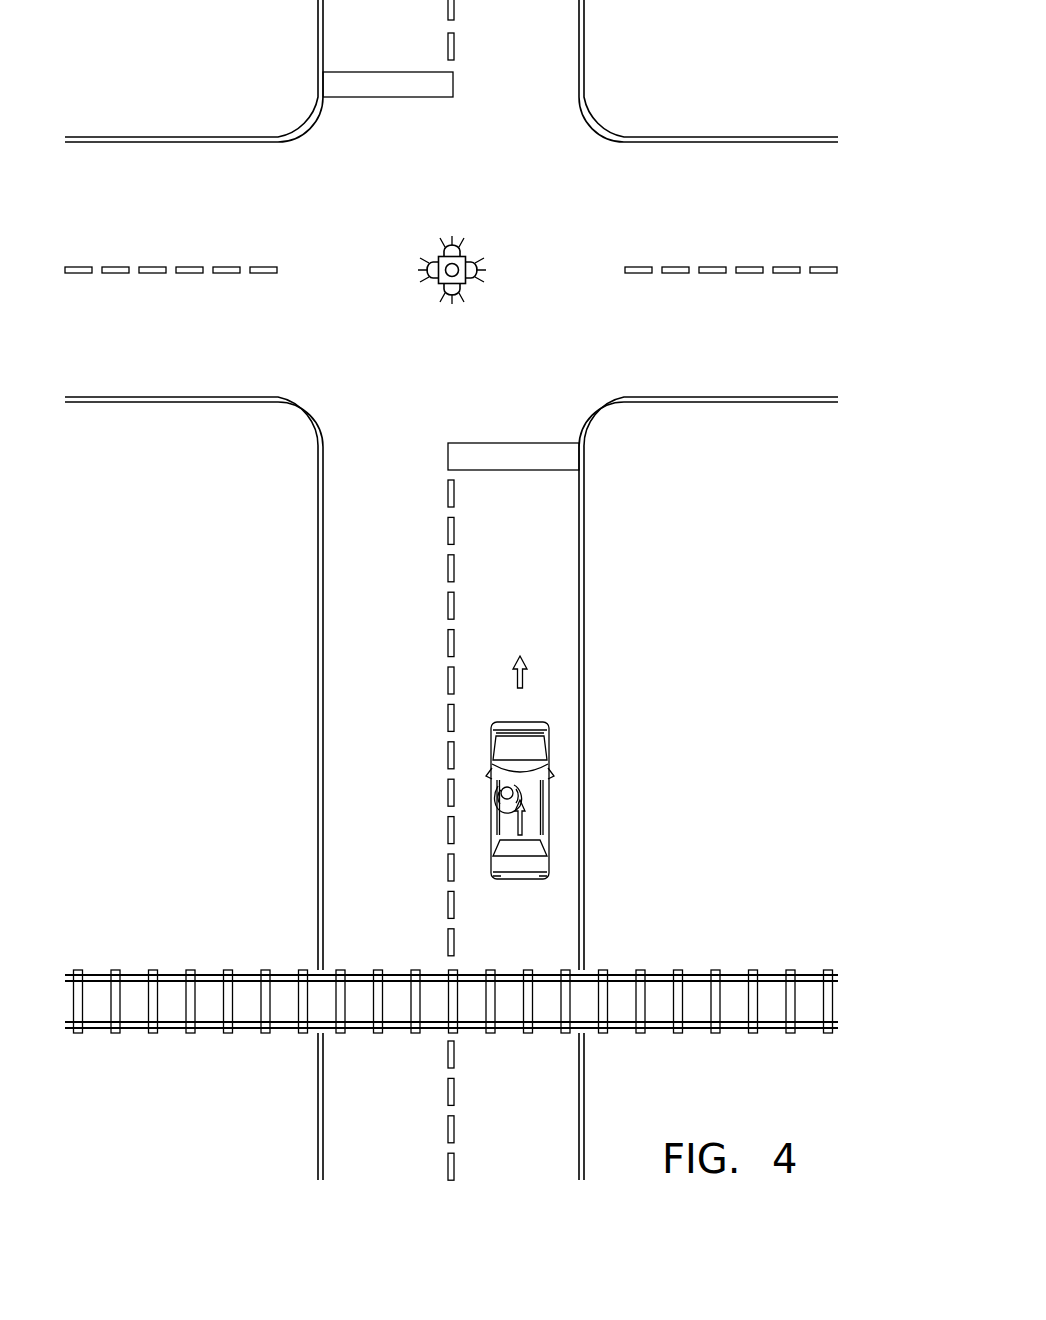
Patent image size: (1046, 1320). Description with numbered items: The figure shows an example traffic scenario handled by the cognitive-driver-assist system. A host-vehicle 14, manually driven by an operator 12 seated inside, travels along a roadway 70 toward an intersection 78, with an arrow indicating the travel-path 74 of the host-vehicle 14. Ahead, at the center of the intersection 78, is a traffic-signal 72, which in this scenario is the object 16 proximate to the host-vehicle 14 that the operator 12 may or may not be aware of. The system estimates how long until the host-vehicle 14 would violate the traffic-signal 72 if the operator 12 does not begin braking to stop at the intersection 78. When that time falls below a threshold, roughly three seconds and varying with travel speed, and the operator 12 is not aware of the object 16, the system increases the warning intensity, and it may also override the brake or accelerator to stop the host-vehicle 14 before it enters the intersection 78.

The operator 12 is at (505, 793).
The host-vehicle 14 is at (545, 757).
The object 16 is at (457, 262).
The traffic-signal 72 is at (452, 270).
The roadway 70 is at (326, 704).
The travel-path 74 is at (527, 675).
The intersection 78 is at (620, 445).